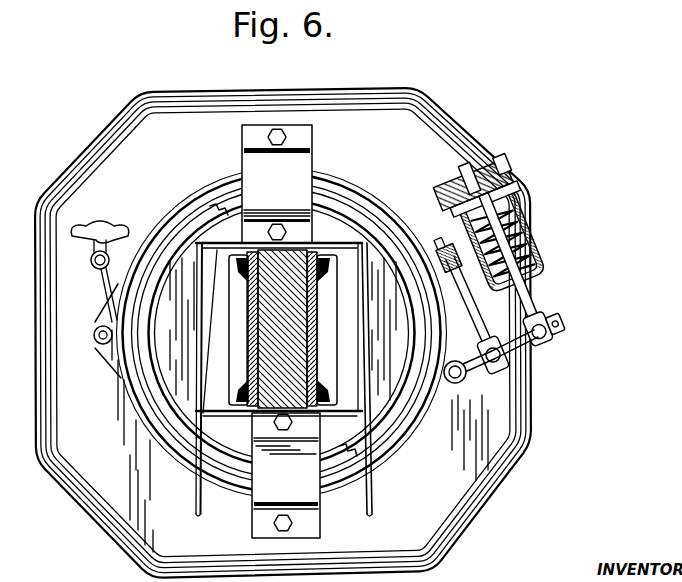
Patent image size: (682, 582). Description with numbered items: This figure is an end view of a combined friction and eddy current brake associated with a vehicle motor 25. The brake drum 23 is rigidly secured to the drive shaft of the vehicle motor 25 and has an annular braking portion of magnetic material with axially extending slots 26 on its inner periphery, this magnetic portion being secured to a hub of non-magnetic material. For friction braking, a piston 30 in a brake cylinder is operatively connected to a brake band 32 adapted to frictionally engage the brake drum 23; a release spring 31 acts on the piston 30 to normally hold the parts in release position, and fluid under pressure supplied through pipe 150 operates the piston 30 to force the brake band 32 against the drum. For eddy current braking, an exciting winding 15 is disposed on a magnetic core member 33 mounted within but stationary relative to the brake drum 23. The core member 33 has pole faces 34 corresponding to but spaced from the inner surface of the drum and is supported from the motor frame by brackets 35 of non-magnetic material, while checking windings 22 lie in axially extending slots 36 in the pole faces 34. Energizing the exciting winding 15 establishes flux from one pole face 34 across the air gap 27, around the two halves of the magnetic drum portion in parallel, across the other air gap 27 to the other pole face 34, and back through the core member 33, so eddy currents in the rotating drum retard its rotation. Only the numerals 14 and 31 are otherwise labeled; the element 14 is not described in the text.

The solenoid 14 is at (542, 261).
The exciting winding 15 is at (308, 324).
The checking windings 22 is at (199, 320).
The brake drum 23 is at (379, 226).
The vehicle motor 25 is at (445, 110).
The axially extending slots 26 is at (214, 206).
The air gap 27 is at (374, 208).
The piston 30 is at (527, 202).
The release spring 31 is at (530, 233).
The brake band 32 is at (338, 174).
The magnetic core member 33 is at (282, 329).
The pole faces 34 is at (346, 223).
The brackets 35 is at (281, 331).
The axially extending slots 36 is at (219, 330).
The pipe 150 is at (497, 158).